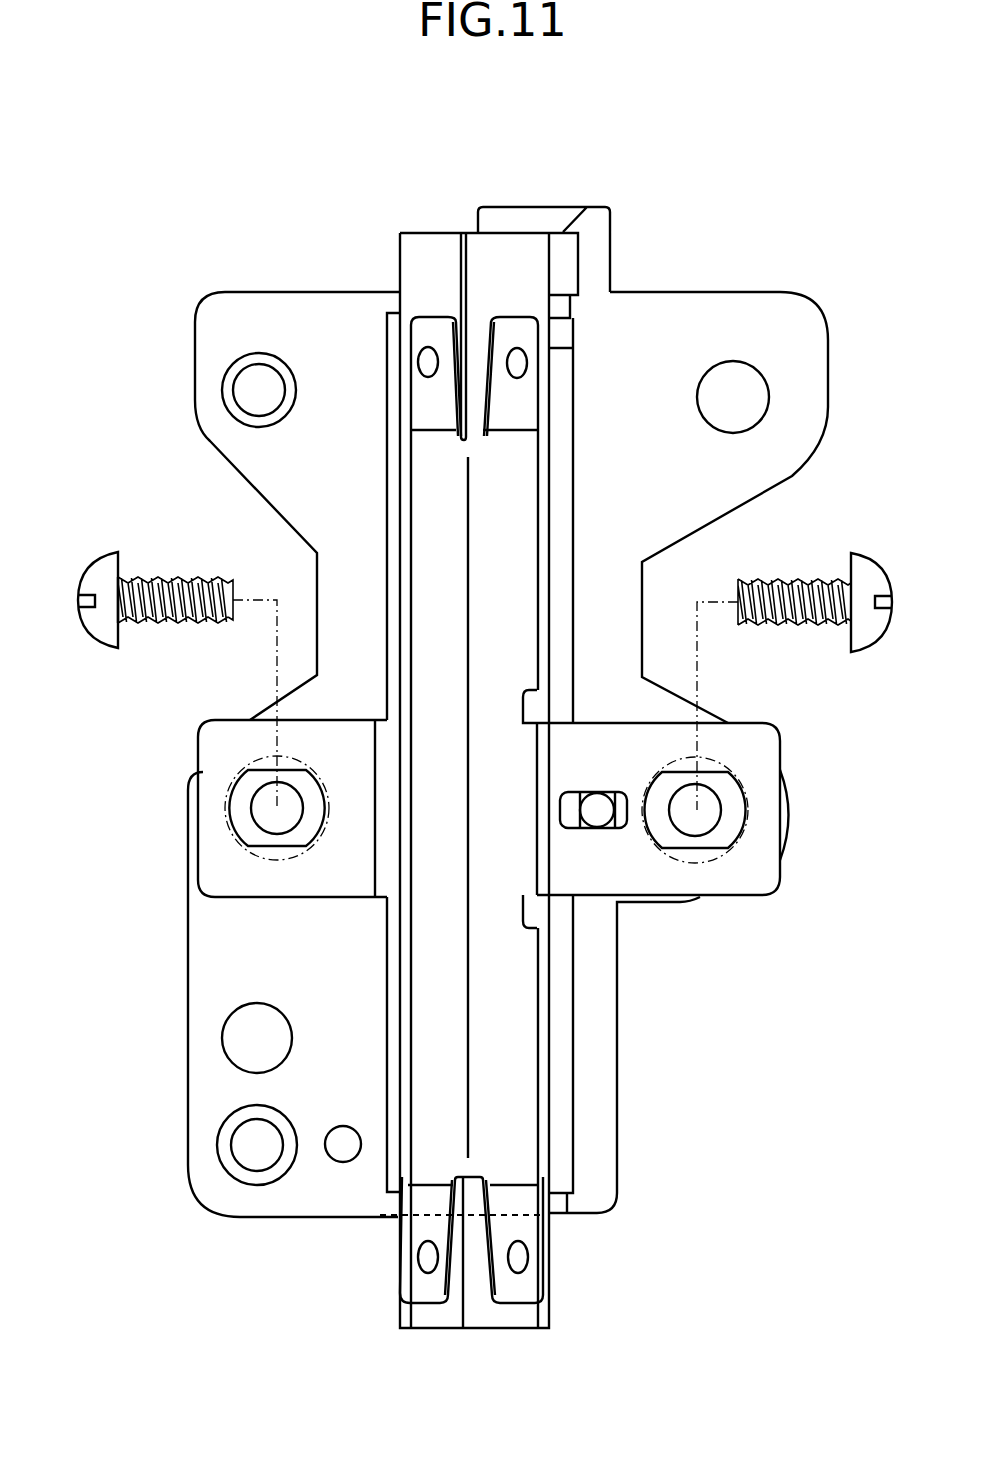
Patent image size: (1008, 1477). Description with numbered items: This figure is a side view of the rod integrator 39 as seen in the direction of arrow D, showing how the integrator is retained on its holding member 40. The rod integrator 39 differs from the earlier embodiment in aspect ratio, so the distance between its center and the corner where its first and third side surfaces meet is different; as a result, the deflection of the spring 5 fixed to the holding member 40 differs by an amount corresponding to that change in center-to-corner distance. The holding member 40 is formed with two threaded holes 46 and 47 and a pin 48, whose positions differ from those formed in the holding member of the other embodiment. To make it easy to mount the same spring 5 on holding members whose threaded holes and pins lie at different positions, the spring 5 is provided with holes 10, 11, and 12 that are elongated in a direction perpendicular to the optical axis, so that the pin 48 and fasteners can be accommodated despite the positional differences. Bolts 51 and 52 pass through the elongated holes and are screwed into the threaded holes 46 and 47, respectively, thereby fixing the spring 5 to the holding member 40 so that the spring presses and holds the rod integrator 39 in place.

The spring 5 is at (517, 1027).
The hole 10 is at (263, 780).
The hole 11 is at (720, 837).
The hole 12 is at (580, 796).
The rod integrator 39 is at (425, 287).
The holding member 40 is at (733, 458).
The threaded hole 46 is at (300, 822).
The threaded hole 47 is at (688, 820).
The pin 48 is at (597, 812).
The bolt 51 is at (107, 555).
The bolt 52 is at (867, 643).